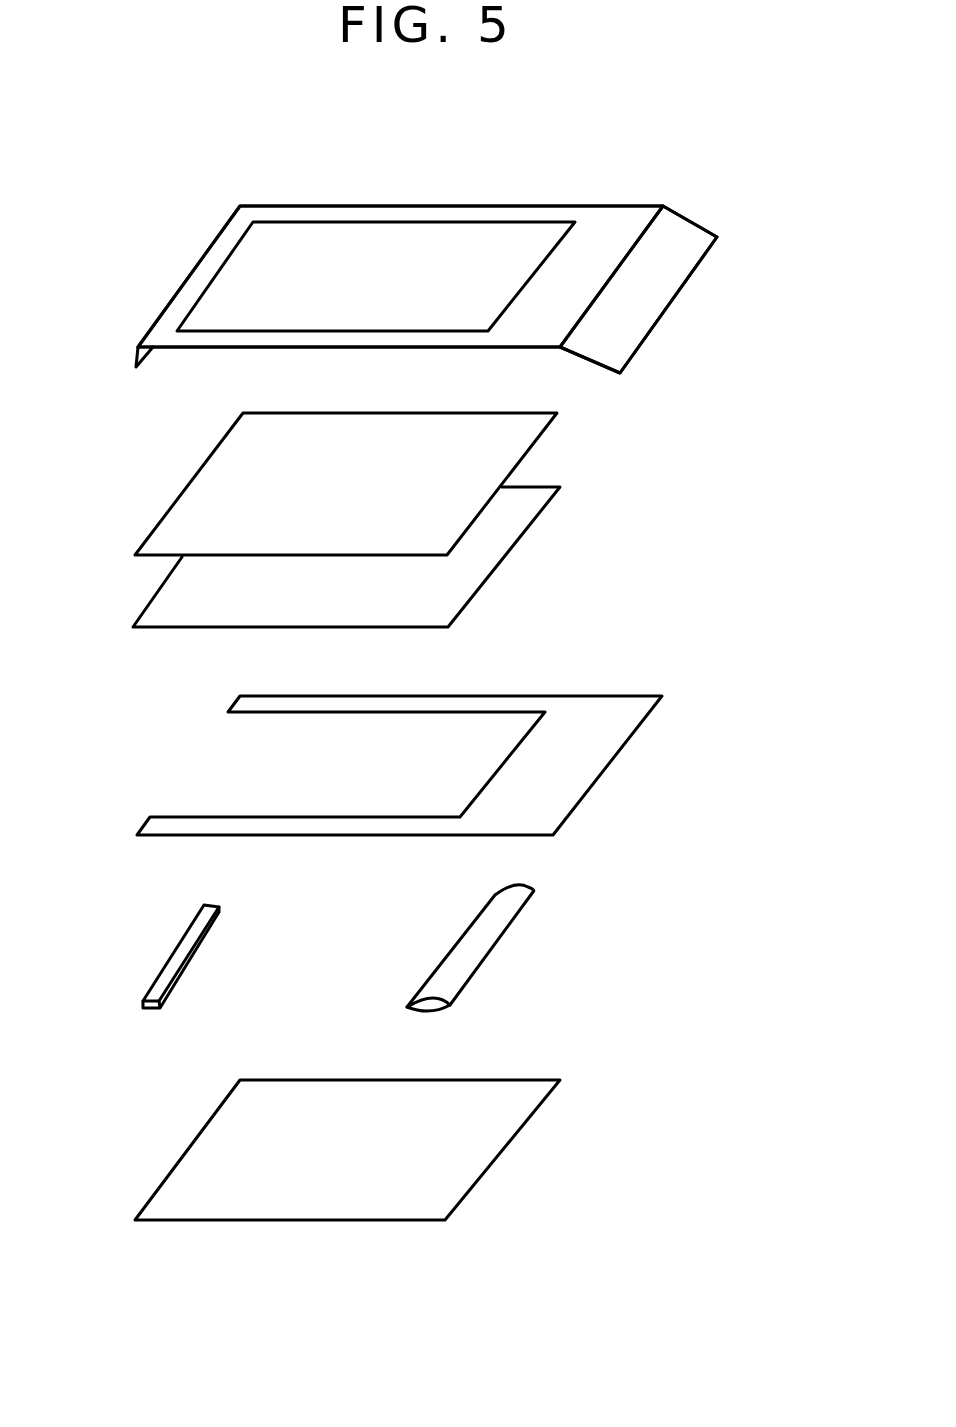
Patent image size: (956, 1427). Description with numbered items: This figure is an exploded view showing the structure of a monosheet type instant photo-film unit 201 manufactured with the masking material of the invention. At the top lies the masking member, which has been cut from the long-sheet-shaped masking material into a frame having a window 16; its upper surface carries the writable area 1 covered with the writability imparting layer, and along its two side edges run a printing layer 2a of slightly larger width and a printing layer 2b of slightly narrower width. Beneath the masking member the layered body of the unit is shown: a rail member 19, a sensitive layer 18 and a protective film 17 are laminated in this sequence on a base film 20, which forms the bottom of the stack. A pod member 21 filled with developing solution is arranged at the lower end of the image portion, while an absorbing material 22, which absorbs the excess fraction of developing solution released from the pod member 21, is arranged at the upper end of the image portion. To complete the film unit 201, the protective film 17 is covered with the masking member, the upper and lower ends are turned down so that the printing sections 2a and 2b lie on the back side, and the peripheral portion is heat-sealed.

The film unit 201 is at (272, 202).
The window 16 is at (415, 243).
The writable area 1 is at (597, 245).
The printing layer 2a is at (692, 238).
The printing layer 2b is at (138, 362).
The protective film 17 is at (512, 435).
The sensitive layer 18 is at (518, 518).
The rail member 19 is at (600, 712).
The absorbing material 22 is at (177, 960).
The pod member 21 is at (508, 913).
The base film 20 is at (518, 1103).